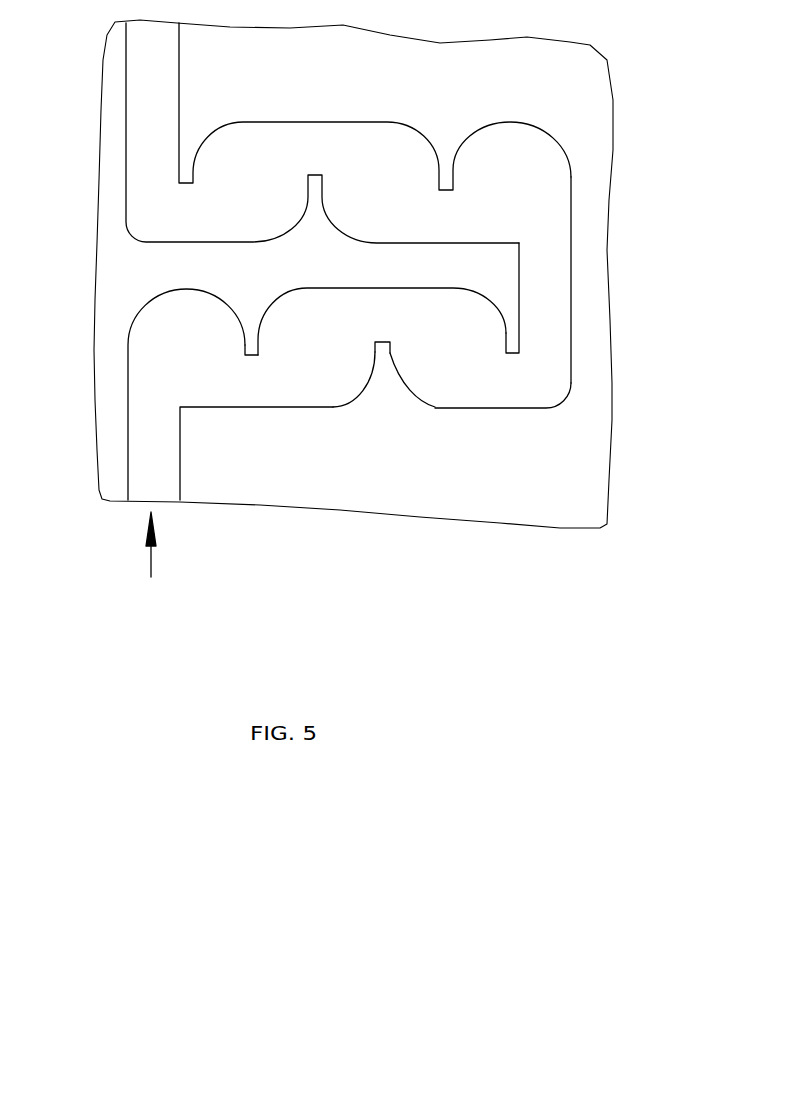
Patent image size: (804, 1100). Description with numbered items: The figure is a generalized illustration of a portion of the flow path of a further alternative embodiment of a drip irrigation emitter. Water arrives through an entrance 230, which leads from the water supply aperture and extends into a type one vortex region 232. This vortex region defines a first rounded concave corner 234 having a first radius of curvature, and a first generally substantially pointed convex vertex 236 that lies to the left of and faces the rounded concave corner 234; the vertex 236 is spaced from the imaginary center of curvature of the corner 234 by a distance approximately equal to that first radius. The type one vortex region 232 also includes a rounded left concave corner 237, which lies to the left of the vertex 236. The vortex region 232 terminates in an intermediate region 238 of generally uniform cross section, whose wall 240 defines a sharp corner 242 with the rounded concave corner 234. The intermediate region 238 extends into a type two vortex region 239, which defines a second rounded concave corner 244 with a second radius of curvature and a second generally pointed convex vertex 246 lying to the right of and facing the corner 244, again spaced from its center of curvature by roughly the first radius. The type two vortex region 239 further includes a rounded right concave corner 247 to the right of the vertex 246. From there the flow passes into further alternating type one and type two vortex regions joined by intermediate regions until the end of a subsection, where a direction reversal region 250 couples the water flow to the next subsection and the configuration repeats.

The entrance 230 is at (144, 354).
The type one vortex region 232 is at (306, 393).
The first rounded concave corner 234 is at (343, 400).
The first generally substantially pointed convex vertex 236 is at (258, 356).
The left concave corner 237 is at (289, 298).
The intermediate region 238 is at (377, 320).
The type two vortex region 239 is at (421, 354).
The wall of the intermediate region 240 is at (377, 342).
The sharp corner 242 is at (375, 353).
The second rounded concave corner 244 is at (506, 332).
The second generally pointed convex vertex 246 is at (390, 347).
The right concave corner 247 is at (435, 407).
The direction reversal region 250 is at (550, 295).